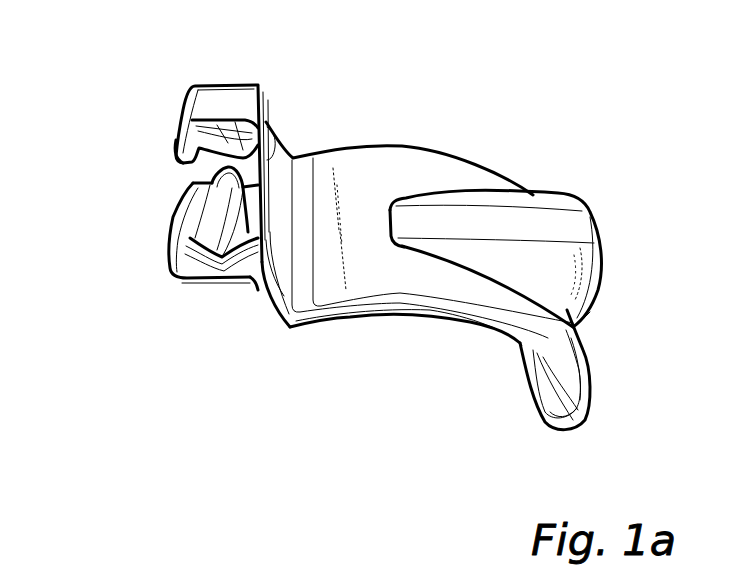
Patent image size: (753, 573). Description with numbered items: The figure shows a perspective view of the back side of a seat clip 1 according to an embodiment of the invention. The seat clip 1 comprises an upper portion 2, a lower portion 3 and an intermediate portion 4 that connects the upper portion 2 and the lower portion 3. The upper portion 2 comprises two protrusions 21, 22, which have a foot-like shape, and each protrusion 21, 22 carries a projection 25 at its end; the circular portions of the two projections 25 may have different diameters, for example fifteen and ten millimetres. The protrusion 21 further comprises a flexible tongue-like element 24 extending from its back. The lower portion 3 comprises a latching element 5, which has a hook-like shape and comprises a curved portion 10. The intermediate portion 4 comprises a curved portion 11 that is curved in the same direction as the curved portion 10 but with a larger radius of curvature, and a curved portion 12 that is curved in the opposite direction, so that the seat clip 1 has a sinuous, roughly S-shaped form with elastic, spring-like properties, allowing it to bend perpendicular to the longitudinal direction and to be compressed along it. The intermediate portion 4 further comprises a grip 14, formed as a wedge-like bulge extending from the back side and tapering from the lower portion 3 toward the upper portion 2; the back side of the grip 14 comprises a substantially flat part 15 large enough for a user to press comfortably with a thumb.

The seat clip 1 is at (527, 95).
The upper portion 2 is at (127, 273).
The lower portion 3 is at (607, 420).
The intermediate portion 4 is at (423, 347).
The latching element 5 is at (555, 400).
The curved portion 10 is at (597, 398).
The curved portion 11 is at (380, 160).
The curved portion 12 is at (285, 298).
The grip 14 is at (597, 284).
The substantially flat part 15 is at (579, 228).
The protrusion 21 is at (223, 268).
The protrusion 22 is at (223, 86).
The flexible tongue-like element 24 is at (210, 201).
The projection 25 is at (182, 162).